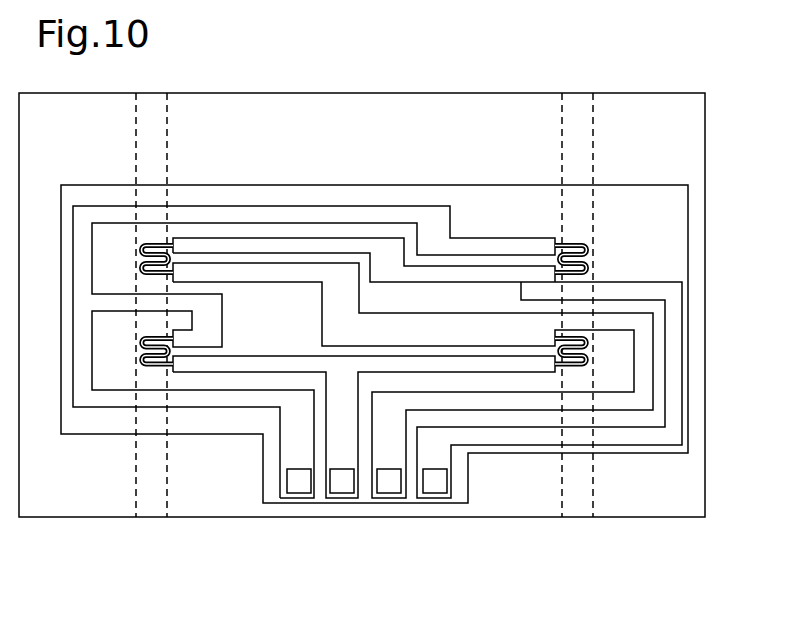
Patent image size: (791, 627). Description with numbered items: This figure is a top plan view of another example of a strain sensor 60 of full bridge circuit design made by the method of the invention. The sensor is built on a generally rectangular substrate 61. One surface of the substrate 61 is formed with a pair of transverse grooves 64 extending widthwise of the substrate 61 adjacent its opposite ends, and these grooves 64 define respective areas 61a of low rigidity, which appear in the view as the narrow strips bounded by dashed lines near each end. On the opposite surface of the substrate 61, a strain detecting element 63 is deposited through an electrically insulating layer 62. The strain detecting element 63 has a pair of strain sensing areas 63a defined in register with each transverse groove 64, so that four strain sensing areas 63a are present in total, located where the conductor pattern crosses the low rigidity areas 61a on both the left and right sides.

The strain sensor 60 is at (693, 82).
The substrate 61 is at (683, 154).
The areas of low rigidity 61a is at (159, 167).
The electrically insulating layer 62 is at (493, 206).
The strain detecting element 63 is at (418, 199).
The strain sensing areas 63a is at (147, 336).
The transverse grooves 64 is at (170, 473).